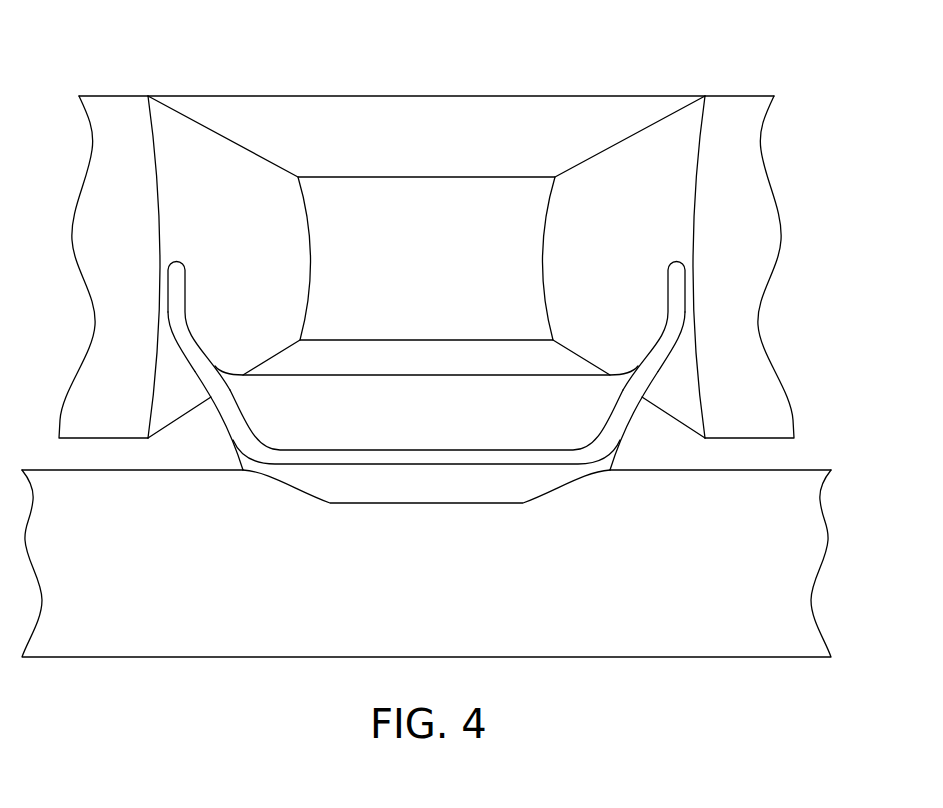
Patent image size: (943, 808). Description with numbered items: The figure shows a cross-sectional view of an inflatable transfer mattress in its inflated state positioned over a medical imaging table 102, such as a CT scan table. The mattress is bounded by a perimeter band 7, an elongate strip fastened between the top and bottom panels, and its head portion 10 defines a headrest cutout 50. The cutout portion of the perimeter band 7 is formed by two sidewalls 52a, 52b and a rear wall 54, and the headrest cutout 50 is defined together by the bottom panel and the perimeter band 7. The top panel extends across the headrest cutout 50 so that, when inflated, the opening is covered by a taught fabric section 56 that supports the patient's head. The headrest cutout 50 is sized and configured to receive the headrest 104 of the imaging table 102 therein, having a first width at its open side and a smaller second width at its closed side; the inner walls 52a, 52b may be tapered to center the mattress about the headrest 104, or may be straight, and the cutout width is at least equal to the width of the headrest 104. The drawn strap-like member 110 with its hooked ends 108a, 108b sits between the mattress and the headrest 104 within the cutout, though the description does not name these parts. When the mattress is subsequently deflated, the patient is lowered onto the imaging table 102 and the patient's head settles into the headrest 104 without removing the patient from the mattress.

The perimeter band 7 is at (112, 112).
The head portion 10 is at (580, 87).
The headrest cutout 50 is at (362, 213).
The sidewall 52a is at (644, 217).
The sidewall 52b is at (243, 217).
The rear wall 54 is at (437, 265).
The taught fabric section 56 is at (425, 138).
The imaging table 102 is at (736, 523).
The headrest 104 is at (430, 495).
The first strap hook end 108a is at (668, 330).
The second strap hook end 108b is at (185, 330).
The strap 110 is at (355, 458).